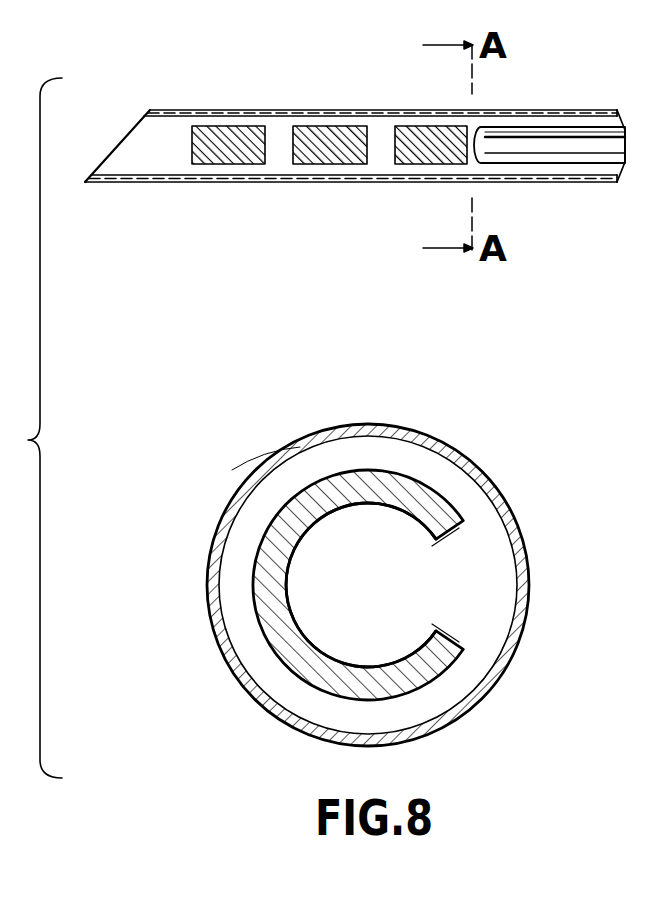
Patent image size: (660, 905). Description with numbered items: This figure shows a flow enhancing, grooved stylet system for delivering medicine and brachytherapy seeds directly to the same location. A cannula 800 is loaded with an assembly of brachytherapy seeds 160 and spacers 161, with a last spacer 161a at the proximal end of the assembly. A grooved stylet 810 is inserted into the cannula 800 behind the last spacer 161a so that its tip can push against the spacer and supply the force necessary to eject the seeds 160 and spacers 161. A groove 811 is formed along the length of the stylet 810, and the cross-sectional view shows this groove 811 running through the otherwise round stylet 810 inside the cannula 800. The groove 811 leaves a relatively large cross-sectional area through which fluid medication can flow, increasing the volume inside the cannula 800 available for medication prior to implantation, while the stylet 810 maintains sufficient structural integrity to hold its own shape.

The cannula 800 is at (317, 110).
The brachytherapy seeds 160 is at (338, 164).
The spacers 161 is at (232, 164).
The last spacer 161a is at (428, 164).
The grooved stylet 810 is at (556, 127).
The groove 811 is at (557, 147).